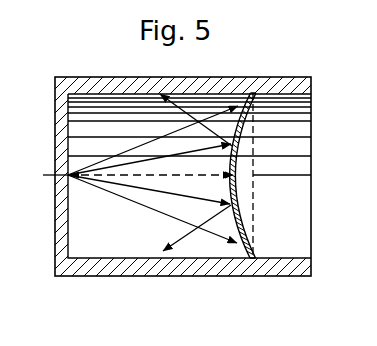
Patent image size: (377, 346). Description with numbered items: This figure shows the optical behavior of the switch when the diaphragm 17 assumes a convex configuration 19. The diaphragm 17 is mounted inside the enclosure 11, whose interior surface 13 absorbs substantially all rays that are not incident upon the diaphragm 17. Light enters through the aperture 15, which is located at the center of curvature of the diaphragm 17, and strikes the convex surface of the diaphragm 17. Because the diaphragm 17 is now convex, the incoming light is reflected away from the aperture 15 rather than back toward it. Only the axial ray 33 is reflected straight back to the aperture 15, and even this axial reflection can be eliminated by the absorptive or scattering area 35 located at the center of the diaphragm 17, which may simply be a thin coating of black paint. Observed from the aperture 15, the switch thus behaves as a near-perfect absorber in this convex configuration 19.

The enclosure 11 is at (285, 70).
The interior surface 13 is at (98, 95).
The aperture 15 is at (55, 176).
The diaphragm 17 is at (238, 252).
The convex configuration 19 is at (238, 149).
The axial ray 33 is at (128, 175).
The absorptive or scattering area 35 is at (232, 182).